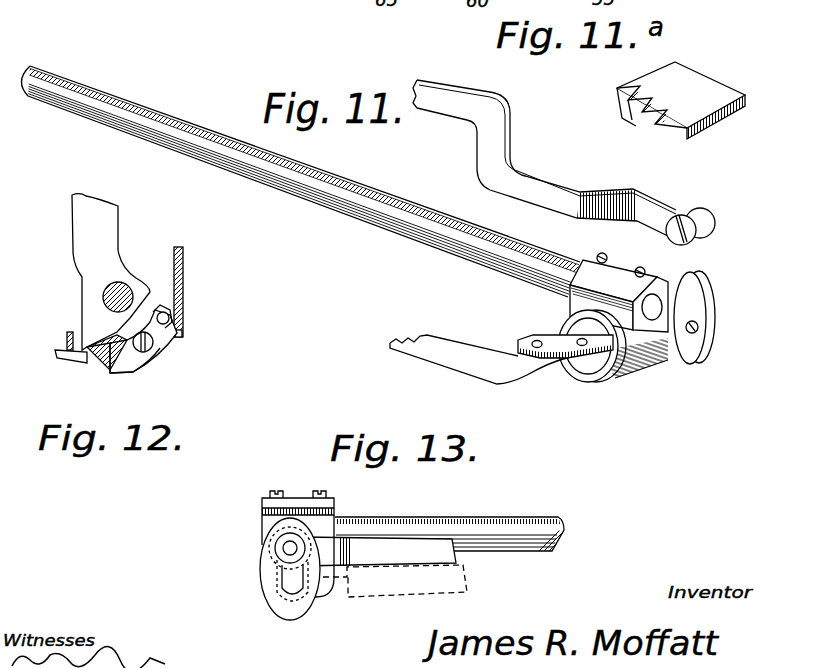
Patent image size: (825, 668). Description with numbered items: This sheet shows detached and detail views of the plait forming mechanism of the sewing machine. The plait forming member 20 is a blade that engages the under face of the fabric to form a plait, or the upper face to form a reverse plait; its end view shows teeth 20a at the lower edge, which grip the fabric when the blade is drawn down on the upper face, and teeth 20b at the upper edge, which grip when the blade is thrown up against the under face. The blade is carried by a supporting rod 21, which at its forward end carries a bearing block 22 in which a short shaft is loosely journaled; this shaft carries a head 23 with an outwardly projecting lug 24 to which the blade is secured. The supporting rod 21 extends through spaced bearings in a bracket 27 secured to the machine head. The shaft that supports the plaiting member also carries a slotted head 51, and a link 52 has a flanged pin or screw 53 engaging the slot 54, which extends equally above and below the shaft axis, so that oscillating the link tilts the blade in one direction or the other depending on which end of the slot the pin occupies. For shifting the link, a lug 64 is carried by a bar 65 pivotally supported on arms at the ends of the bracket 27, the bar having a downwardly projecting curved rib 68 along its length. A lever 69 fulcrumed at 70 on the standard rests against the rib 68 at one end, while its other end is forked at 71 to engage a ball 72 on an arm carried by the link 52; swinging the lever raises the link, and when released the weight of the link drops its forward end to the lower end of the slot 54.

In FIG. 11, the plait forming member 20 is at (460, 357).
In FIG. 11A, the plait forming member 20 is at (706, 84).
In FIG. 11A, the teeth at lower edge of blade 20a is at (660, 118).
In FIG. 11A, the teeth at upper edge of blade 20b is at (684, 130).
In FIG. 11, the supporting rod 21 is at (400, 210).
In FIG. 13, the supporting rod 21 is at (526, 526).
In FIG. 11, the bearing block 22 is at (652, 347).
In FIG. 13, the bearing block 22 is at (262, 528).
In FIG. 11, the head 23 is at (610, 382).
In FIG. 11, the outwardly projecting lug 24 is at (544, 360).
In FIG. 12, the bracket 27 is at (105, 235).
In FIG. 11, the slotted head 51 is at (698, 282).
In FIG. 13, the slotted head 51 is at (267, 573).
In FIG. 11, the link 52 is at (497, 142).
In FIG. 12, the link 52 is at (183, 255).
In FIG. 13, the link 52 is at (408, 547).
In FIG. 11, the flanged pin or screw 53 is at (682, 232).
In FIG. 13, the slot 54 is at (272, 593).
In FIG. 12, the lug 64 is at (63, 355).
In FIG. 12, the bar 65 is at (102, 353).
In FIG. 12, the curved rib 68 is at (100, 370).
In FIG. 12, the lever 69 is at (140, 372).
In FIG. 12, the fulcrum 70 is at (158, 348).
In FIG. 12, the forked end 71 is at (150, 308).
In FIG. 12, the ball 72 is at (170, 315).